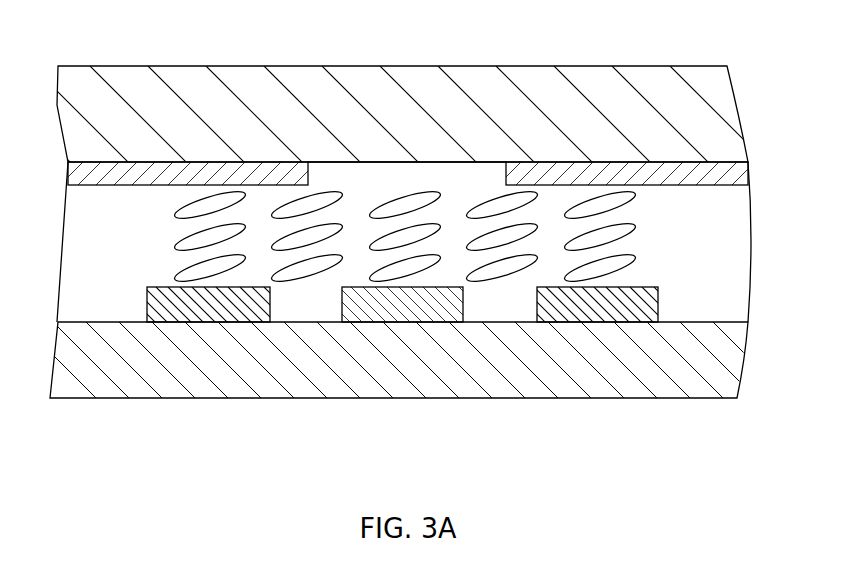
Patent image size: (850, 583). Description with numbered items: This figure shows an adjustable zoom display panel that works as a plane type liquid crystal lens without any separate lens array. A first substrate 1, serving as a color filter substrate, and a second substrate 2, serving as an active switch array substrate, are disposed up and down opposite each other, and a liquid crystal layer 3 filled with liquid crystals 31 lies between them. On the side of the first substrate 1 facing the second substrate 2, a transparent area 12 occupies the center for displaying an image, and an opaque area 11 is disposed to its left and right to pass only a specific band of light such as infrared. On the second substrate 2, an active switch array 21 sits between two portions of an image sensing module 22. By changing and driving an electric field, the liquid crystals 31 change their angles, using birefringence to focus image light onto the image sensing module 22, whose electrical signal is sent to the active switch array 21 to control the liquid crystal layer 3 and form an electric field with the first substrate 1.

The first substrate 1 is at (730, 148).
The opaque area 11 is at (70, 175).
The transparent area 12 is at (440, 160).
The second substrate 2 is at (723, 363).
The active switch array 21 is at (402, 322).
The image sensing module 22 is at (207, 322).
The liquid crystal layer 3 is at (742, 268).
The liquid crystals 31 is at (632, 245).